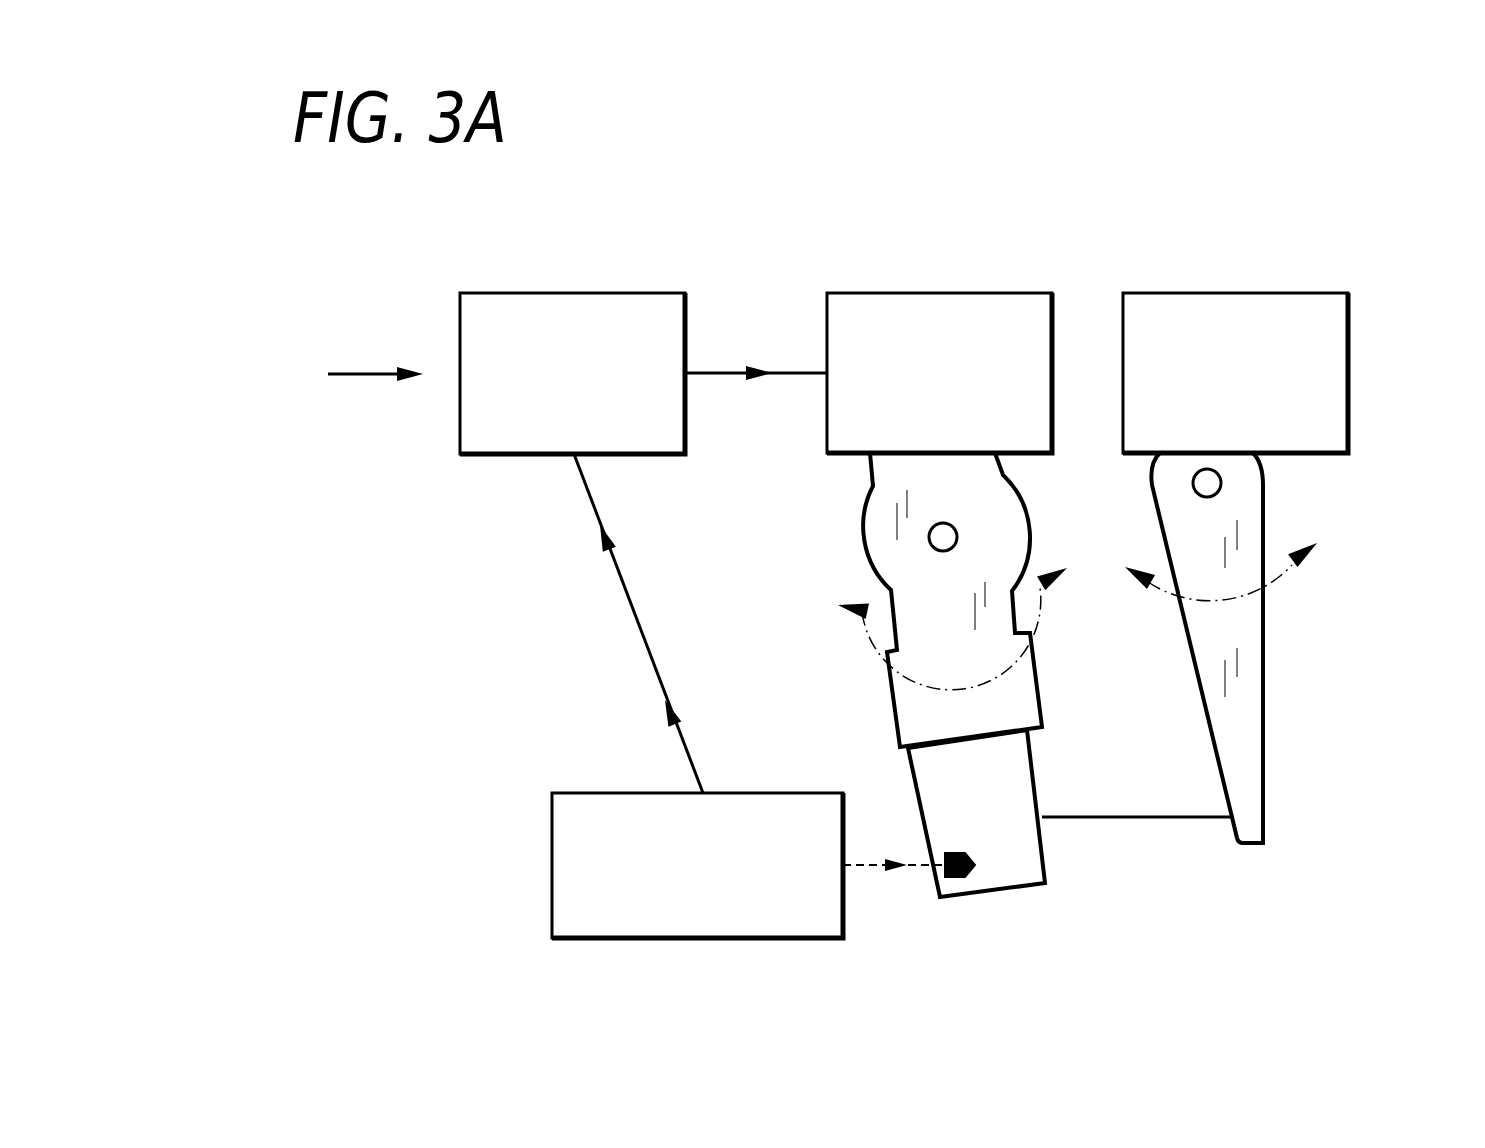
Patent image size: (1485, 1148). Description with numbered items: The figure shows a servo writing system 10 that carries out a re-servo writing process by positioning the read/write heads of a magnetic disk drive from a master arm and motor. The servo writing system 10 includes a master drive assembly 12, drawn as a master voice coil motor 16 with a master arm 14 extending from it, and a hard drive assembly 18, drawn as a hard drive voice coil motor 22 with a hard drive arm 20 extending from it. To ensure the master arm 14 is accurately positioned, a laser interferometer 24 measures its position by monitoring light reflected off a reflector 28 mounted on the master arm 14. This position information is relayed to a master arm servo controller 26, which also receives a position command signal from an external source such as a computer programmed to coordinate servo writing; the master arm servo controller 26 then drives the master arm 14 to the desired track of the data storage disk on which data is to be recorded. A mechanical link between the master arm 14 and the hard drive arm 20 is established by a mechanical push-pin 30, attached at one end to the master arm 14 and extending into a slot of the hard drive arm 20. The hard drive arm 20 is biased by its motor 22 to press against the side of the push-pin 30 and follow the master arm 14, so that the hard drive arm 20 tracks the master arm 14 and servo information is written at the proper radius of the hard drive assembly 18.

The servo writing system 10 is at (1378, 158).
The master drive assembly 12 is at (1077, 242).
The master arm 14 is at (832, 646).
The master voice coil motor 16 is at (990, 292).
The hard drive assembly 18 is at (1375, 242).
The hard drive arm 20 is at (1303, 640).
The hard drive voice coil motor 22 is at (1285, 292).
The laser interferometer 24 is at (780, 793).
The master arm servo controller 26 is at (622, 293).
The reflector 28 is at (957, 878).
The mechanical push-pin 30 is at (1152, 819).